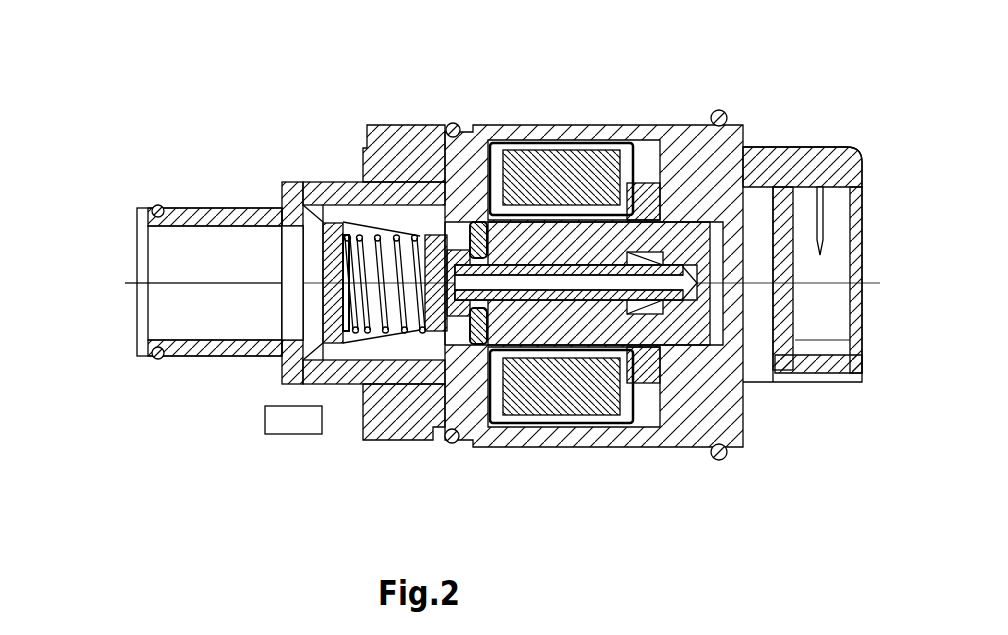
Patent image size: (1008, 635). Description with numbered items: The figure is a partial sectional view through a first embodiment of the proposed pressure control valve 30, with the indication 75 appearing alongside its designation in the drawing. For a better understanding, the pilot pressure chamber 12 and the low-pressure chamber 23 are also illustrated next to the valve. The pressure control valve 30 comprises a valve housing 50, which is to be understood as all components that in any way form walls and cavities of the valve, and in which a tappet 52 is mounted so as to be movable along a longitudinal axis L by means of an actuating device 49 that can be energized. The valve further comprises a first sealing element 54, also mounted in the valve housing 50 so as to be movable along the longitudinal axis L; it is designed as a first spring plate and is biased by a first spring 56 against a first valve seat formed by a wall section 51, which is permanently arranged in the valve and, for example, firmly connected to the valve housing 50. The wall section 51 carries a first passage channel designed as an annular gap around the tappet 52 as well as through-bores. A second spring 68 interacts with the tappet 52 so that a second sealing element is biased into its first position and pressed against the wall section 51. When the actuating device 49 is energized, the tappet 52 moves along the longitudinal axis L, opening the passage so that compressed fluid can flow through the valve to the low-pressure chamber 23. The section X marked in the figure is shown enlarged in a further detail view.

The pressure control valve 30 is at (222, 124).
The actuator unit 75 is at (464, 256).
The pilot pressure chamber 12 is at (80, 273).
The longitudinal axis L is at (196, 285).
The low-pressure chamber 23 is at (293, 424).
The valve housing 50 is at (331, 192).
The wall section 51 is at (455, 222).
The first sealing element 54 is at (488, 215).
The first spring 56 is at (468, 245).
The actuating device 49 is at (560, 112).
The tappet 52 is at (573, 272).
The second spring 68 is at (543, 322).
The section X is at (478, 345).